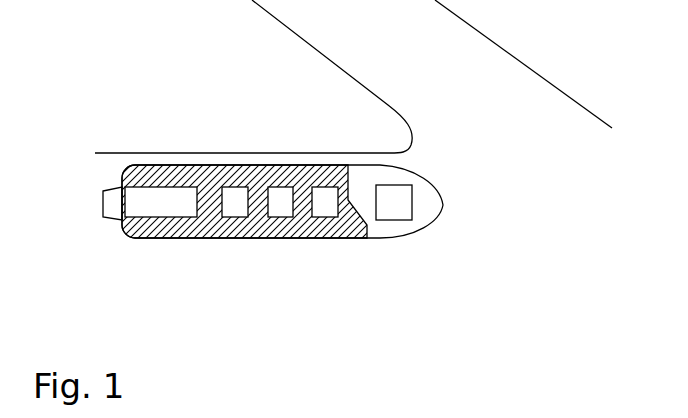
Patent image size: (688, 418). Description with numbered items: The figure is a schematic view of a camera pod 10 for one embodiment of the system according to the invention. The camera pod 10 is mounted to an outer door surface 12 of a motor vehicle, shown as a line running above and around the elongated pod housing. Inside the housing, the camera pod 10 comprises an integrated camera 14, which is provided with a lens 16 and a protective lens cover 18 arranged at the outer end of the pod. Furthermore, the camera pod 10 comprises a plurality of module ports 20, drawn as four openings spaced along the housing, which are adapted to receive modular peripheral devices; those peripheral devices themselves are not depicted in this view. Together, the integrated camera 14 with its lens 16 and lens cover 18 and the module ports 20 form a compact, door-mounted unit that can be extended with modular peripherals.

The camera pod 10 is at (443, 212).
The outer door surface 12 is at (503, 102).
The integrated camera 14 is at (170, 207).
The lens 16 is at (123, 235).
The protective lens cover 18 is at (103, 202).
The module ports 20 is at (236, 212).